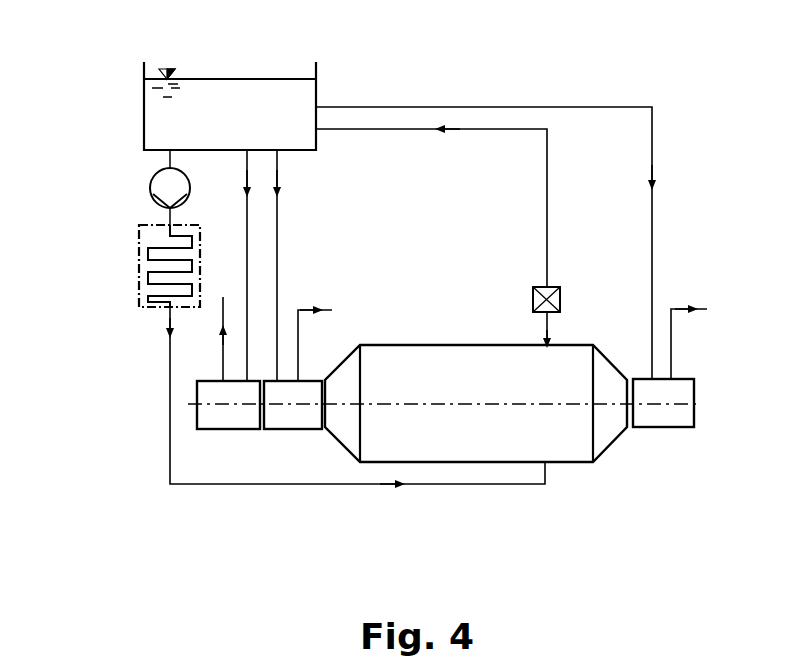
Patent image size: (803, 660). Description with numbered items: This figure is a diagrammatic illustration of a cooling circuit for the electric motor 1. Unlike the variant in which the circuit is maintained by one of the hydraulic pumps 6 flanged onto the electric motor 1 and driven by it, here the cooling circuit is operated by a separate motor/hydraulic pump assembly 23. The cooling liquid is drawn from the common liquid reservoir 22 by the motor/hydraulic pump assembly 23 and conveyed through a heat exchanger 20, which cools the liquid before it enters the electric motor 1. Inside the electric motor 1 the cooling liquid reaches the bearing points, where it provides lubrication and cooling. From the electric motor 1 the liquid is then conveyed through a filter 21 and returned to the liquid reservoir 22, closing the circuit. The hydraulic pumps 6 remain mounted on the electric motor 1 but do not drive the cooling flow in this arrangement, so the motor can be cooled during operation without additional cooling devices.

The electric motor 1 is at (471, 437).
The hydraulic pumps 6 is at (233, 422).
The heat exchanger 20 is at (165, 285).
The filter 21 is at (560, 298).
The liquid reservoir 22 is at (172, 128).
The motor/hydraulic pump assembly 23 is at (170, 188).